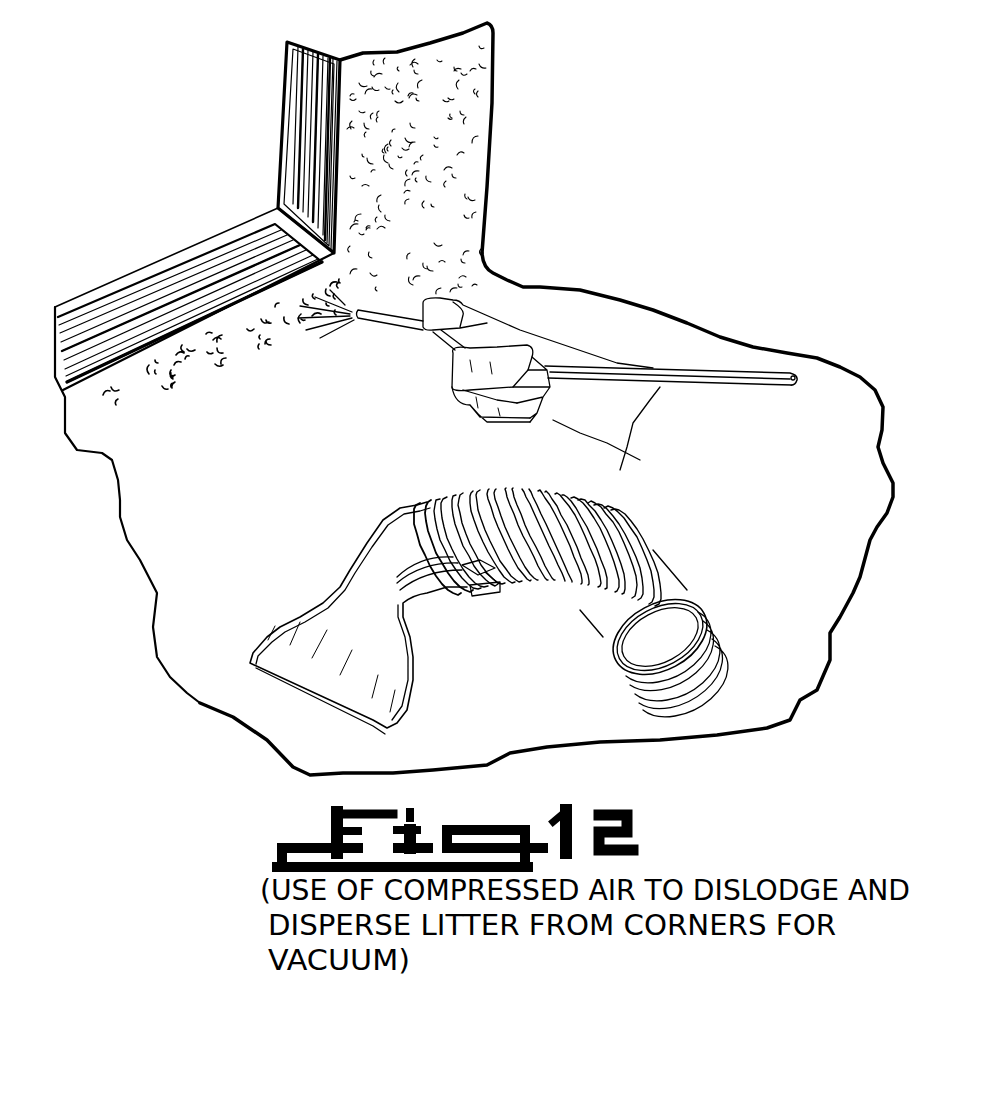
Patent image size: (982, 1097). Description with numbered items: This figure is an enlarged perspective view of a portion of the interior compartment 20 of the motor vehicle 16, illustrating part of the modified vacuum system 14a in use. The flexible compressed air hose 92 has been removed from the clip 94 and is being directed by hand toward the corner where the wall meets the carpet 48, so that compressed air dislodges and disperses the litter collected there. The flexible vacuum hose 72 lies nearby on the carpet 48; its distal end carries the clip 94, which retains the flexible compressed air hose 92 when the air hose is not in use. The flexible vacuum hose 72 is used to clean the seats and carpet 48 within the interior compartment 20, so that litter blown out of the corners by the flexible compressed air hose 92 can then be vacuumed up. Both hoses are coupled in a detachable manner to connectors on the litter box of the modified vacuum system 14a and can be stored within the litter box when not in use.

The motor vehicle 16 is at (283, 112).
The interior compartment 20 is at (530, 298).
The modified vacuum system 14a is at (708, 303).
The carpet 48 is at (183, 583).
The flexible compressed air hose 92 is at (757, 378).
The clip 94 is at (427, 500).
The flexible vacuum hose 72 is at (681, 700).